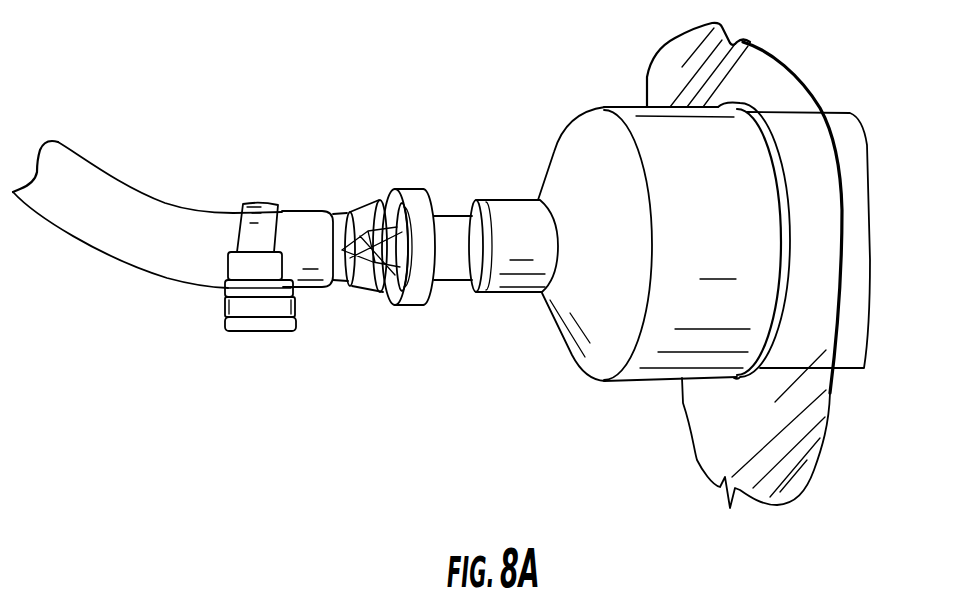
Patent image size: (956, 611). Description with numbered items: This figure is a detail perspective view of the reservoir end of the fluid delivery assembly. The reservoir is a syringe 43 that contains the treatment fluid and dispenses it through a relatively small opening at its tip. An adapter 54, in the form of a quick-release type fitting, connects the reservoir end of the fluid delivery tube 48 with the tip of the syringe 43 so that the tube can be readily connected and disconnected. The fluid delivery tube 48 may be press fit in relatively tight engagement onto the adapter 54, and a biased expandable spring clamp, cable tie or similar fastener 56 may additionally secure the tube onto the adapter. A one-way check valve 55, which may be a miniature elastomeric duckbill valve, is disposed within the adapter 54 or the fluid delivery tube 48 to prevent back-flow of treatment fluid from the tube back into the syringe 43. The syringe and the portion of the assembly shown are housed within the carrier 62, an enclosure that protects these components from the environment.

The syringe 43 is at (582, 179).
The fluid delivery tube 48 is at (126, 262).
The adapter 54 is at (410, 189).
The one-way check valve 55 is at (370, 273).
The tube connector fitting 56 is at (253, 333).
The carrier 62 is at (715, 432).